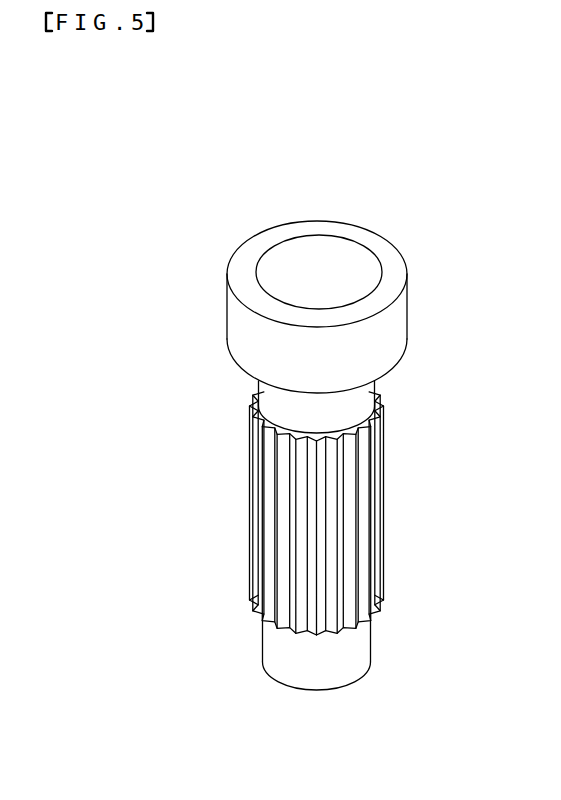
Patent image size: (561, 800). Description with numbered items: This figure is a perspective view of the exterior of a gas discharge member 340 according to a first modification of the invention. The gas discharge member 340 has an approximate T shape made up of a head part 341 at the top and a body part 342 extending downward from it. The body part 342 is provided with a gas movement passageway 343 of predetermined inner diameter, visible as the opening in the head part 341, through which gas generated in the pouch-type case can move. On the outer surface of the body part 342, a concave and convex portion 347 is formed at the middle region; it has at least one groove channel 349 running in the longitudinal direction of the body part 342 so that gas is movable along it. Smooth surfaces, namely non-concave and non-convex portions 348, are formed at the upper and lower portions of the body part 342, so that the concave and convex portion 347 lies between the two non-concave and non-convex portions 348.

The gas discharge member 340 is at (345, 137).
The head part 341 is at (228, 300).
The body part 342 is at (246, 567).
The gas movement passageway 343 is at (353, 268).
The concave and convex portion 347 is at (402, 500).
The non-concave and non-convex portion 348 is at (402, 597).
The groove channel 349 is at (304, 627).